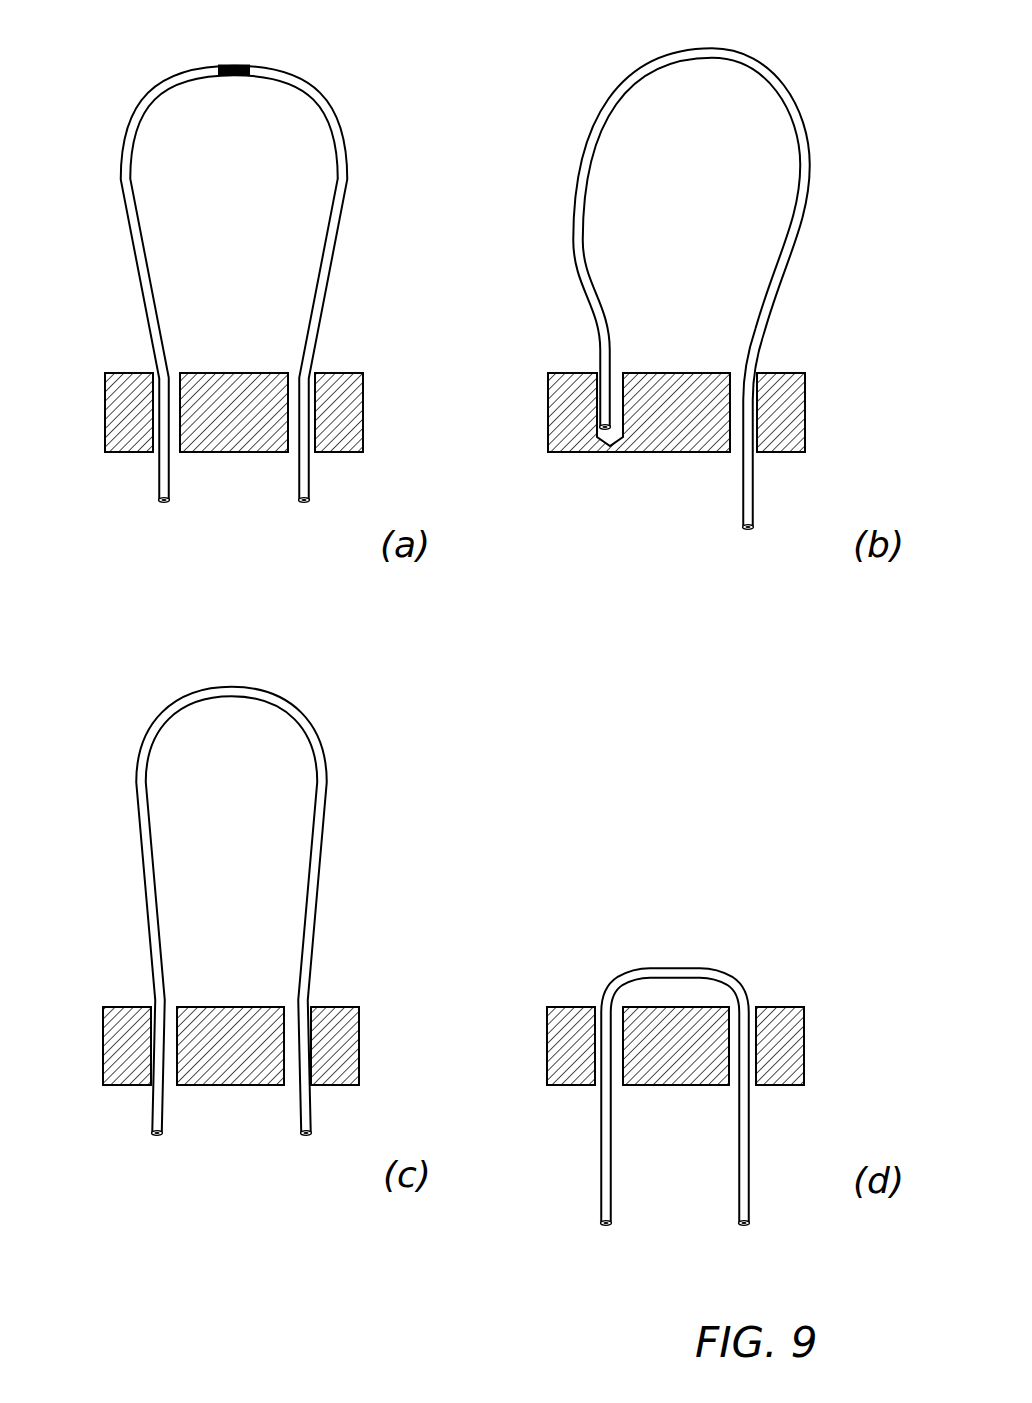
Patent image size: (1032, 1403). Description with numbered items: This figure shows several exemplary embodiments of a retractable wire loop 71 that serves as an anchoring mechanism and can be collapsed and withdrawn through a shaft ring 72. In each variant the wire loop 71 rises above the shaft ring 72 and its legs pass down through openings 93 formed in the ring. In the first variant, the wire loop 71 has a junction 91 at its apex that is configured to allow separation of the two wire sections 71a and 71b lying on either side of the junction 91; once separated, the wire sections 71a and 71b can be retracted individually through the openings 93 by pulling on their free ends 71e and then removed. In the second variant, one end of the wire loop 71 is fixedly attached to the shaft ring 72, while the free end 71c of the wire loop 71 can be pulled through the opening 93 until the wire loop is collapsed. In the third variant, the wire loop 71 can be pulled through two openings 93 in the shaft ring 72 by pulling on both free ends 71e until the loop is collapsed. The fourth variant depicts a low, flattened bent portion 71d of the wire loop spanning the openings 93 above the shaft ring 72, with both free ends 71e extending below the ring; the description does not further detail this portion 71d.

The wire loop 71 is at (322, 96).
The wire section 71a is at (118, 181).
The wire section 71b is at (338, 227).
The free end 71c is at (750, 528).
The bent top portion of tube 71d is at (694, 967).
The free end 71e is at (157, 479).
The shaft ring 72 is at (337, 452).
The junction 91 is at (237, 64).
The opening 93 is at (172, 371).